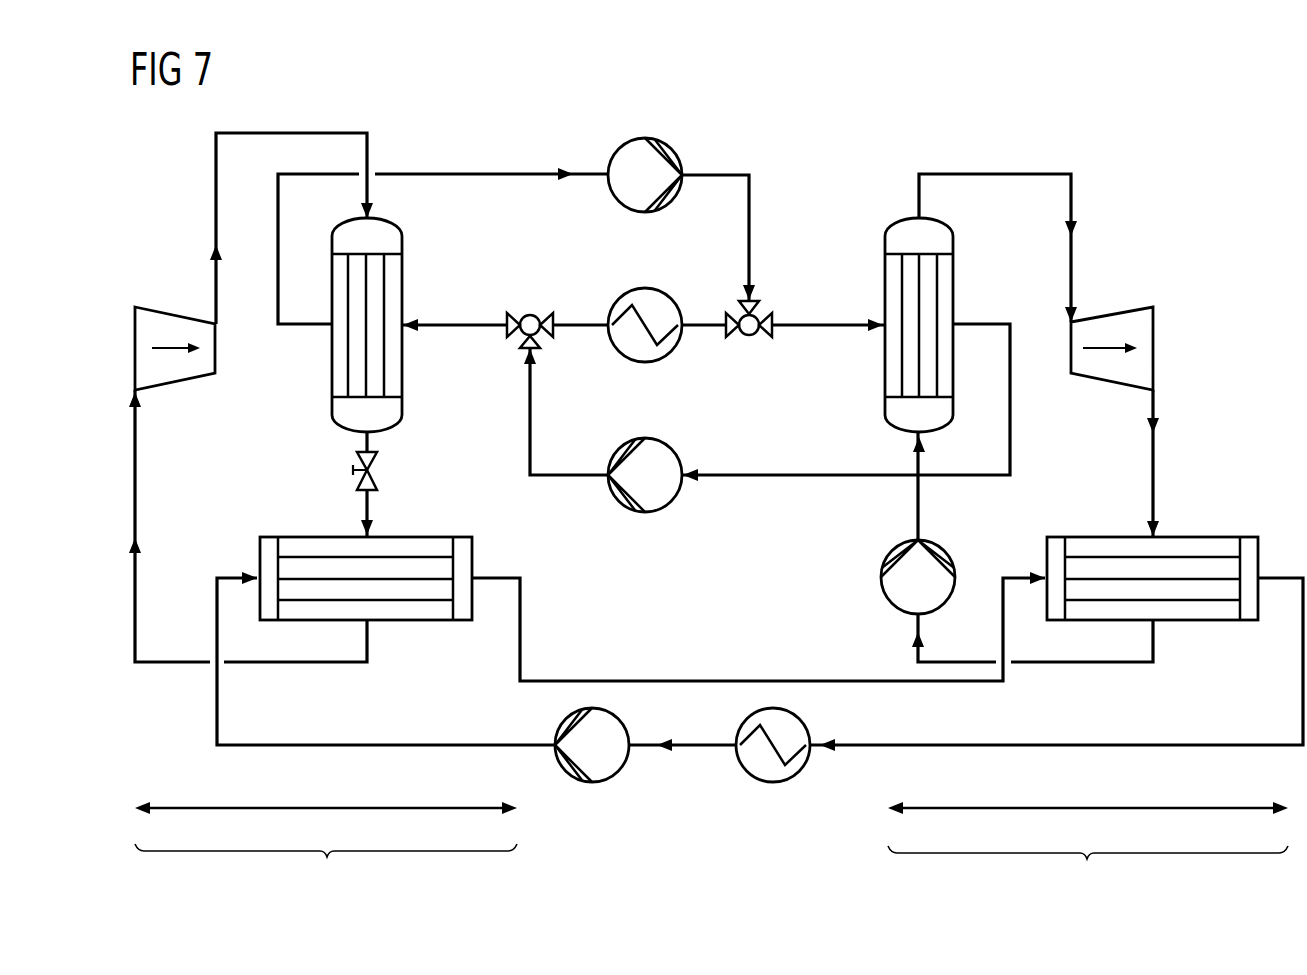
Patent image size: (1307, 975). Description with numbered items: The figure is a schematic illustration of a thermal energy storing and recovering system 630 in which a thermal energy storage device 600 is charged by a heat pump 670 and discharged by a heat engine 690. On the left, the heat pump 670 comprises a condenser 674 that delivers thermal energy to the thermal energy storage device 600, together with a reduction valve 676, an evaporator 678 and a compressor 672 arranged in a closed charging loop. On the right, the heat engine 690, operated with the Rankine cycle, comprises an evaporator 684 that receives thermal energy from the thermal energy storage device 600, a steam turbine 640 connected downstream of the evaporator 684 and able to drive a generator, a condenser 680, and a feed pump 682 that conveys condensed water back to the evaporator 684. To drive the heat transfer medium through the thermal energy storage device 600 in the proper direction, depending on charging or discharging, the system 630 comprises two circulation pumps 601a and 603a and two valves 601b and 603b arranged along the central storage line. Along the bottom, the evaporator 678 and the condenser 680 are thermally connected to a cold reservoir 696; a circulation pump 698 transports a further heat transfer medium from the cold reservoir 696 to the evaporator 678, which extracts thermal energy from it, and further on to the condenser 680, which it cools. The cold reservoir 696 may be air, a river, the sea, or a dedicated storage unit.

The thermal energy storing and recovering system 630 is at (1180, 178).
The compressor 672 is at (215, 348).
The condenser 674 is at (402, 245).
The circulation pump 601a is at (655, 138).
The thermal energy storage device 600 is at (643, 288).
The valve 603b is at (530, 313).
The valve 601b is at (758, 314).
The circulation pump 603a is at (648, 438).
The evaporator 684 is at (953, 243).
The steam turbine 640 is at (1153, 338).
The reduction valve 676 is at (378, 478).
The evaporator 678 is at (305, 537).
The feed pump 682 is at (882, 580).
The condenser 680 is at (1215, 537).
The circulation pump 698 is at (598, 782).
The cold reservoir 696 is at (775, 782).
The heat pump 670 is at (326, 833).
The heat engine 690 is at (1088, 832).